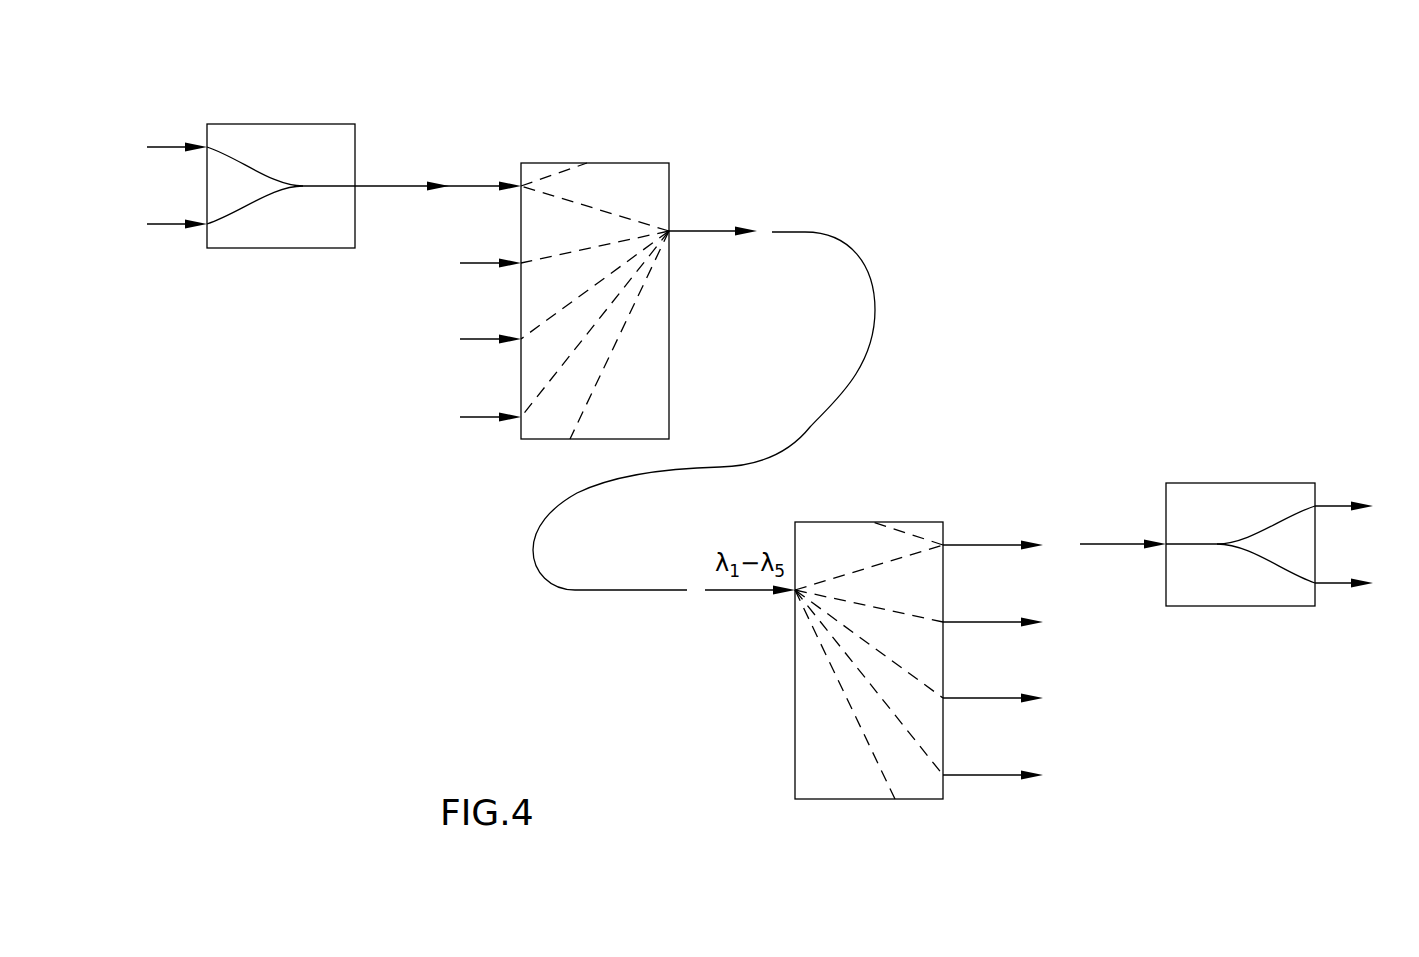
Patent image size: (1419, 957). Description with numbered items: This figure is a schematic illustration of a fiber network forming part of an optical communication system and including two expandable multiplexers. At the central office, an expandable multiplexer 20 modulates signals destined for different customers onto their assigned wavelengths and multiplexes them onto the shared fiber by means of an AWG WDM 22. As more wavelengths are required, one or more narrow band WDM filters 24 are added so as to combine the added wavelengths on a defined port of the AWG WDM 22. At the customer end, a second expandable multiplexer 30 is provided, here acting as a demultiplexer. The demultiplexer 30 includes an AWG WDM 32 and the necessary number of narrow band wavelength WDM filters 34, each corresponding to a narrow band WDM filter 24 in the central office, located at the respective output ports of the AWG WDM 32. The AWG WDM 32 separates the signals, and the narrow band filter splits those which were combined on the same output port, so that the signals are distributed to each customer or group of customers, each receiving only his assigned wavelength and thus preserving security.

The expandable multiplexer 20 is at (470, 122).
The AWG WDM 22 is at (633, 163).
The narrow band WDM filter 24 is at (235, 124).
The second expandable multiplexer 30 is at (1065, 444).
The AWG WDM 32 is at (848, 522).
The narrow band wavelength WDM filter 34 is at (1240, 483).